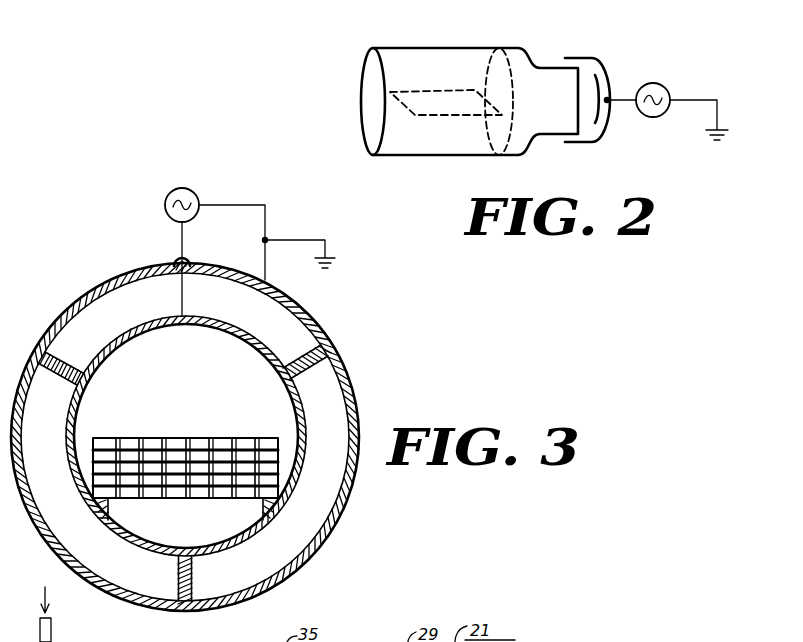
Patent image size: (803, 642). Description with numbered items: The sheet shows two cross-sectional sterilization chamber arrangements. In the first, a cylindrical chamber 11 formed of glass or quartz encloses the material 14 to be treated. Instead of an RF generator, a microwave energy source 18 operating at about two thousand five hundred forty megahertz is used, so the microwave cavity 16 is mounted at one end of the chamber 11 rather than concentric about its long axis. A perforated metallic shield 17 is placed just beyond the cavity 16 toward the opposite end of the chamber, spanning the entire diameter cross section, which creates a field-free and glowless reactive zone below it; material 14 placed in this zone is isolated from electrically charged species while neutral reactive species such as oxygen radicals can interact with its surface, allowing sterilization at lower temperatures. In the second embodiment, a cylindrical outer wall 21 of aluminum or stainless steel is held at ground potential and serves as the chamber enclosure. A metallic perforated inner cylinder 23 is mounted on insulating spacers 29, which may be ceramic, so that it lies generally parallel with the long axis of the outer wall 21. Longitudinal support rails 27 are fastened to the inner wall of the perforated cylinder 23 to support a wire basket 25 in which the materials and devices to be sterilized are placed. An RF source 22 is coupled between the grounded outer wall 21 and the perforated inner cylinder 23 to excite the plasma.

In FIG. 2, the cylindrical chamber 11 is at (422, 48).
In FIG. 2, the material 14 is at (423, 96).
In FIG. 2, the microwave cavity 16 is at (597, 58).
In FIG. 2, the perforated metallic shield 17 is at (495, 140).
In FIG. 2, the microwave energy source 18 is at (660, 84).
In FIG. 3, the cylindrical outer wall 21 is at (345, 375).
In FIG. 3, the RF source 22 is at (195, 192).
In FIG. 3, the perforated inner cylinder 23 is at (255, 343).
In FIG. 3, the wire basket 25 is at (96, 469).
In FIG. 3, the longitudinal support rails 27 is at (278, 500).
In FIG. 3, the insulating spacers 29 is at (66, 364).